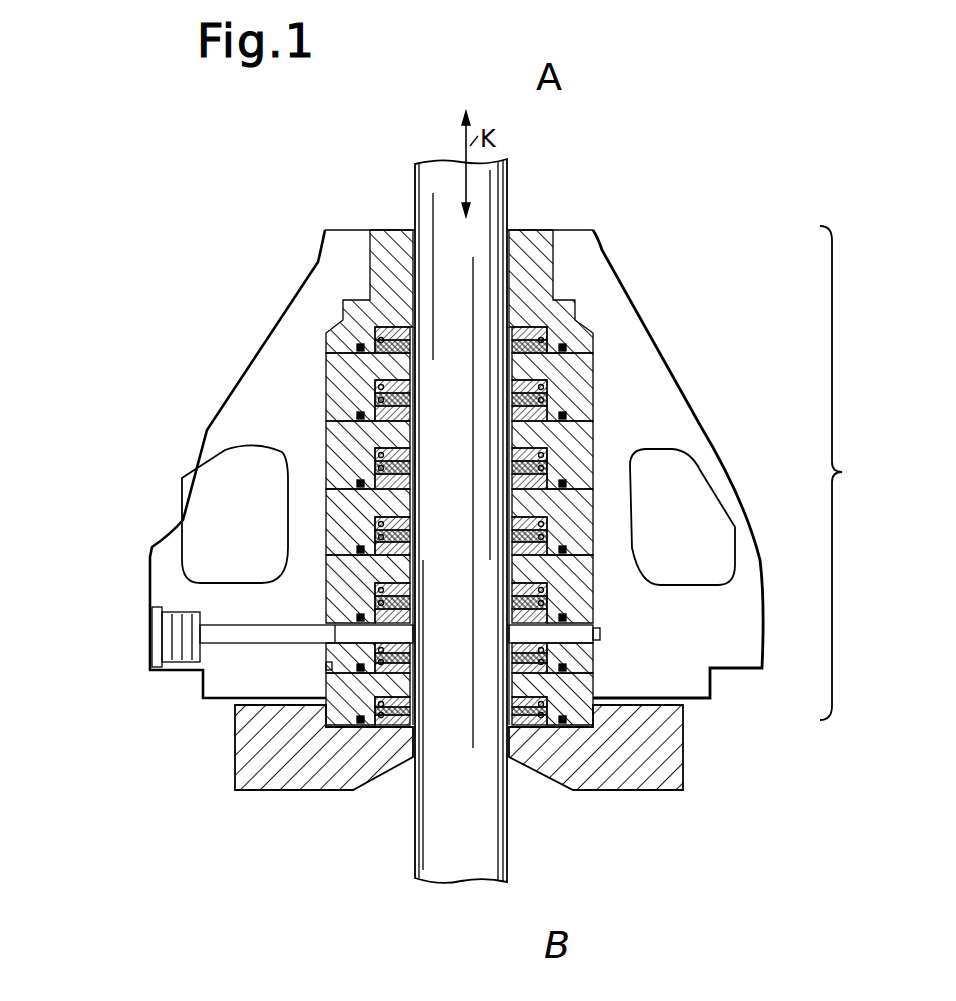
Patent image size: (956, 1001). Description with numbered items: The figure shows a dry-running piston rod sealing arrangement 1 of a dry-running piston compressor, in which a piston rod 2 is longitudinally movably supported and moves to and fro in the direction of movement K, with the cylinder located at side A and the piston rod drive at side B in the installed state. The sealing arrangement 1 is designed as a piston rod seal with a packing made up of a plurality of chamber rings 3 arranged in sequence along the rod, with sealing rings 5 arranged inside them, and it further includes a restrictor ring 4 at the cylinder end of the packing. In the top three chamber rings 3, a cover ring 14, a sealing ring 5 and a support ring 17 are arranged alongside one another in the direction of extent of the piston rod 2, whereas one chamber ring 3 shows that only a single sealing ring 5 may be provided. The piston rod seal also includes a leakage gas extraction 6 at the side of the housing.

The dry-running piston rod sealing arrangement 1 is at (537, 231).
The piston rod 2 is at (507, 848).
The chamber ring 3 is at (575, 505).
The restrictor ring 4 is at (558, 310).
The sealing ring 5 is at (378, 588).
The leakage gas extraction 6 is at (155, 640).
The cover ring 14 is at (545, 382).
The support ring 17 is at (360, 414).